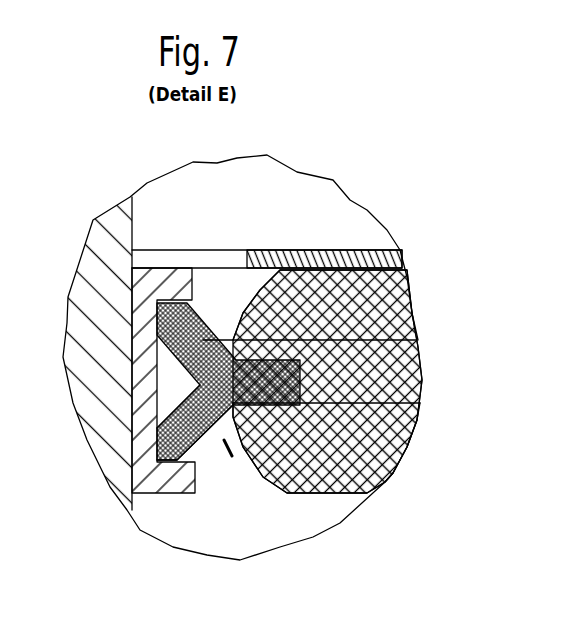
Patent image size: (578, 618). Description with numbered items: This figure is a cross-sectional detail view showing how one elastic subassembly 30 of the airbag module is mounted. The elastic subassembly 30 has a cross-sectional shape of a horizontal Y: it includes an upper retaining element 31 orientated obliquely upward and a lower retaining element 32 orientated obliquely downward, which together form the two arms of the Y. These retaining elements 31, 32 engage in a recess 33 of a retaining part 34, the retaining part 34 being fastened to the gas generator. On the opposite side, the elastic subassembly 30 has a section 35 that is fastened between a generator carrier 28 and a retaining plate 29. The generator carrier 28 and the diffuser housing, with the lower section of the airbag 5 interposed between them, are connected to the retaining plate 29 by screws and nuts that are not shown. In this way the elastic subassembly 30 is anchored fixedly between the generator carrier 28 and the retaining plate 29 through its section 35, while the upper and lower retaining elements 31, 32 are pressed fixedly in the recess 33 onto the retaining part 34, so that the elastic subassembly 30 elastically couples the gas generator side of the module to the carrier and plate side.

The airbag 5 is at (380, 247).
The generator carrier 28 is at (420, 357).
The retaining plate 29 is at (397, 447).
The elastic subassembly 30 is at (224, 440).
The upper retaining element 31 is at (203, 315).
The lower retaining element 32 is at (205, 440).
The recess 33 is at (162, 398).
The retaining part 34 is at (143, 287).
The section 35 is at (407, 300).